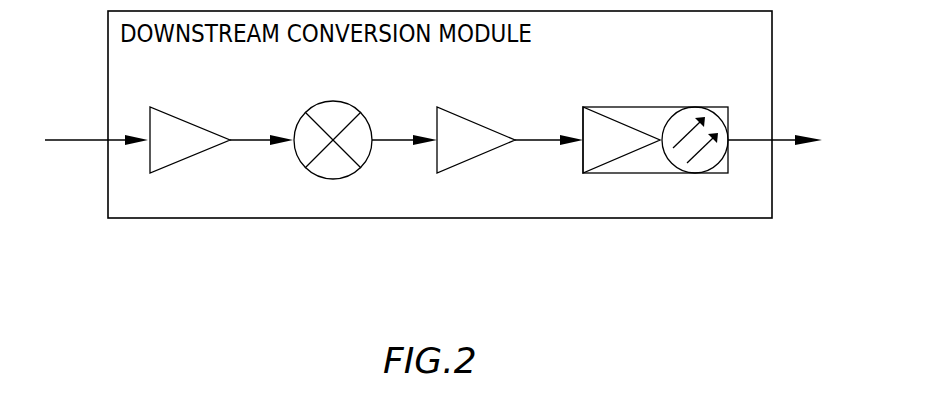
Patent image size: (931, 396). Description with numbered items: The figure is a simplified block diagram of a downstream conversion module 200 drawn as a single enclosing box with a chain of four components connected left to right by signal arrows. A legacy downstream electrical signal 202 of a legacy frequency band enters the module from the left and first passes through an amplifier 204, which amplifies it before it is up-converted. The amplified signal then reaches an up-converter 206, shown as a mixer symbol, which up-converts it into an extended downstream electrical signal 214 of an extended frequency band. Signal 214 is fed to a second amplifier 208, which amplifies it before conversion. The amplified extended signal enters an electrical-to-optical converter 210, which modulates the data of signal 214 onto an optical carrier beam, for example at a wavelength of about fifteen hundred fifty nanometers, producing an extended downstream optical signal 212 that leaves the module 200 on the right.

The downstream conversion module 200 is at (606, 253).
The legacy downstream electrical signal 202 is at (70, 142).
The amplifier 204 is at (180, 117).
The up-converter 206 is at (342, 101).
The amplifier 208 is at (470, 117).
The electrical-to-optical converter 210 is at (647, 107).
The extended downstream optical signal 212 is at (777, 142).
The extended downstream electrical signal 214 is at (392, 142).